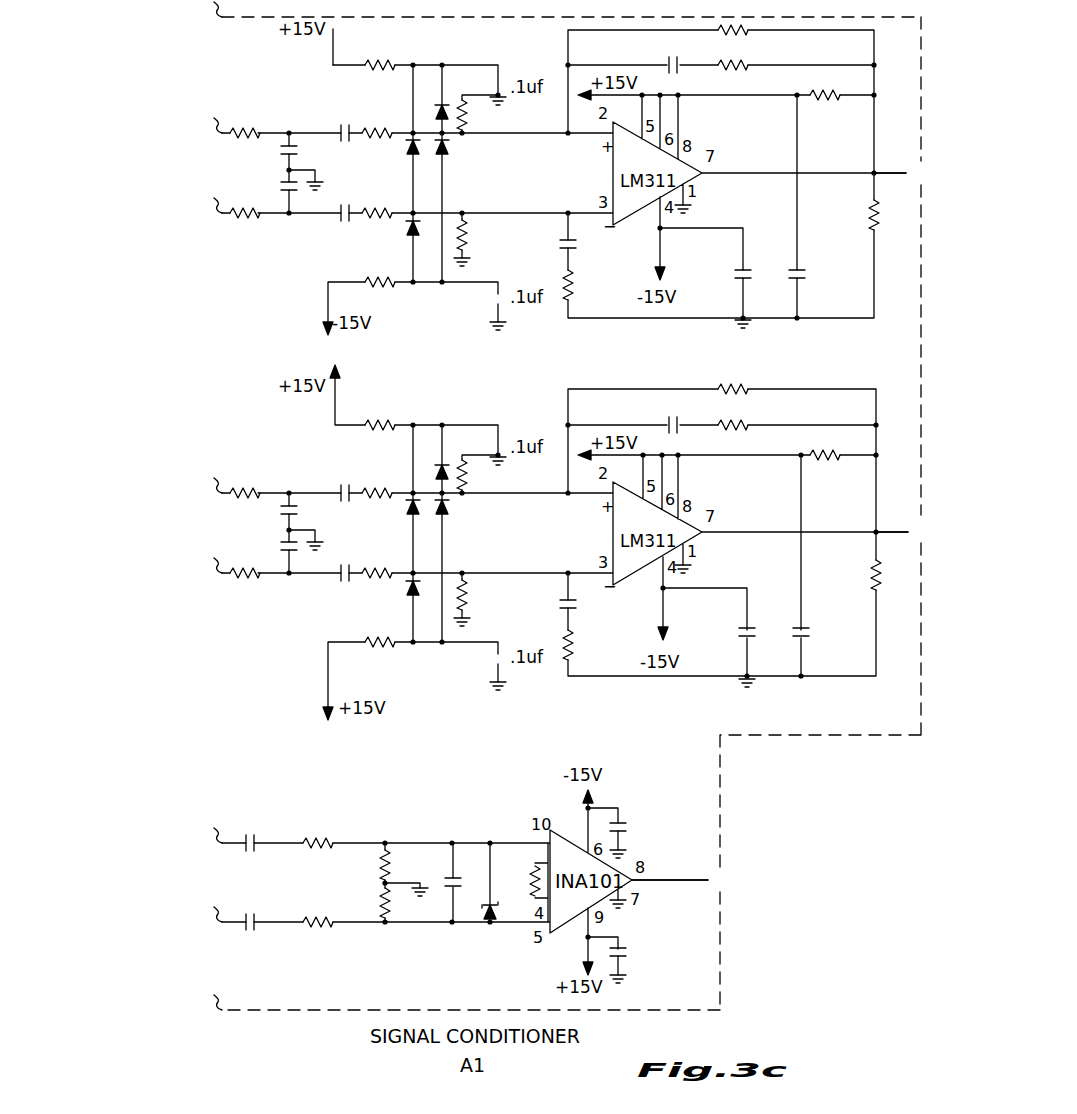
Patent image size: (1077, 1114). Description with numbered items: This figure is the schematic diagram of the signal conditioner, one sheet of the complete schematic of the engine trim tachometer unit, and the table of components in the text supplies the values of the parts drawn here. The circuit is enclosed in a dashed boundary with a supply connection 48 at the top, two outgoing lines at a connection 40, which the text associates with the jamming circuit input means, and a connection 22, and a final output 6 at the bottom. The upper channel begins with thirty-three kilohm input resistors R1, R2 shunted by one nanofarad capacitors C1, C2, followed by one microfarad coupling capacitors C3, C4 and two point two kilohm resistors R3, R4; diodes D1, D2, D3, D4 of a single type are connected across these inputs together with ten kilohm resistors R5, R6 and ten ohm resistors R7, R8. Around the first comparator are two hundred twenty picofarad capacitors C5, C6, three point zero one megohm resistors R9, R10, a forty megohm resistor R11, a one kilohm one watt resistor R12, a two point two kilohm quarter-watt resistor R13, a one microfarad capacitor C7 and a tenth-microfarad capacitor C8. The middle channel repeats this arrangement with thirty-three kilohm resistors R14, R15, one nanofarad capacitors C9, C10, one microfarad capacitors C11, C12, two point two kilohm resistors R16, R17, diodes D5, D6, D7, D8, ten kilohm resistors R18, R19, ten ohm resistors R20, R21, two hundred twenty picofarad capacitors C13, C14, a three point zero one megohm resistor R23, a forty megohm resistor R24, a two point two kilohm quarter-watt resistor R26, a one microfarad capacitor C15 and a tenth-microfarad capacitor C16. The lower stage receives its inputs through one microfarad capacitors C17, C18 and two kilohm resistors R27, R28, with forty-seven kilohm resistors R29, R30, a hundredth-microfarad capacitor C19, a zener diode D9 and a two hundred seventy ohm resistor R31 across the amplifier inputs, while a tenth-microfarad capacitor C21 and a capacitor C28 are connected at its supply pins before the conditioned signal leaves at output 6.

The input terminal 48 is at (333, 34).
The jamming circuit input means 40 is at (902, 172).
The output terminal 22 is at (905, 530).
The output terminal 6 is at (682, 879).
The resistor R1 is at (245, 120).
The resistor R2 is at (244, 204).
The resistor R3 is at (377, 120).
The resistor R4 is at (377, 201).
The resistor R5 is at (474, 115).
The resistor R6 is at (476, 237).
The resistor R7 is at (380, 52).
The resistor R8 is at (380, 269).
The resistor R9 is at (585, 288).
The resistor R10 is at (737, 75).
The resistor R11 is at (737, 41).
The resistor R12 is at (832, 106).
The resistor R13 is at (894, 215).
The resistor R14 is at (250, 480).
The resistor R15 is at (241, 564).
The resistor R16 is at (381, 480).
The resistor R17 is at (382, 561).
The resistor R18 is at (480, 475).
The resistor R19 is at (482, 597).
The resistor R20 is at (386, 412).
The resistor R21 is at (385, 629).
The resistor R23 is at (737, 435).
The resistor R24 is at (737, 400).
The resistor R26 is at (896, 575).
The resistor R27 is at (320, 832).
The resistor R28 is at (320, 910).
The resistor R29 is at (403, 865).
The resistor R30 is at (403, 905).
The resistor R31 is at (518, 883).
The capacitor C1 is at (274, 153).
The capacitor C2 is at (273, 190).
The capacitor C3 is at (344, 122).
The capacitor C4 is at (345, 203).
The capacitor C5 is at (552, 250).
The capacitor C6 is at (675, 54).
The capacitor C7 is at (813, 275).
The capacitor C8 is at (725, 275).
The capacitor C9 is at (273, 513).
The capacitor C10 is at (271, 550).
The capacitor C11 is at (346, 482).
The capacitor C12 is at (348, 563).
The capacitor C13 is at (550, 610).
The capacitor C14 is at (678, 414).
The capacitor C15 is at (823, 634).
The capacitor C16 is at (728, 634).
The capacitor C17 is at (253, 831).
The capacitor C18 is at (253, 911).
The capacitor C19 is at (468, 869).
The capacitor C21 is at (640, 827).
The capacitor C28 is at (641, 955).
The diode D1 is at (402, 152).
The diode D2 is at (401, 233).
The diode D3 is at (433, 105).
The diode D4 is at (457, 152).
The diode D5 is at (402, 512).
The diode D6 is at (401, 593).
The diode D7 is at (433, 465).
The diode D8 is at (457, 512).
The zener diode D9 is at (501, 885).